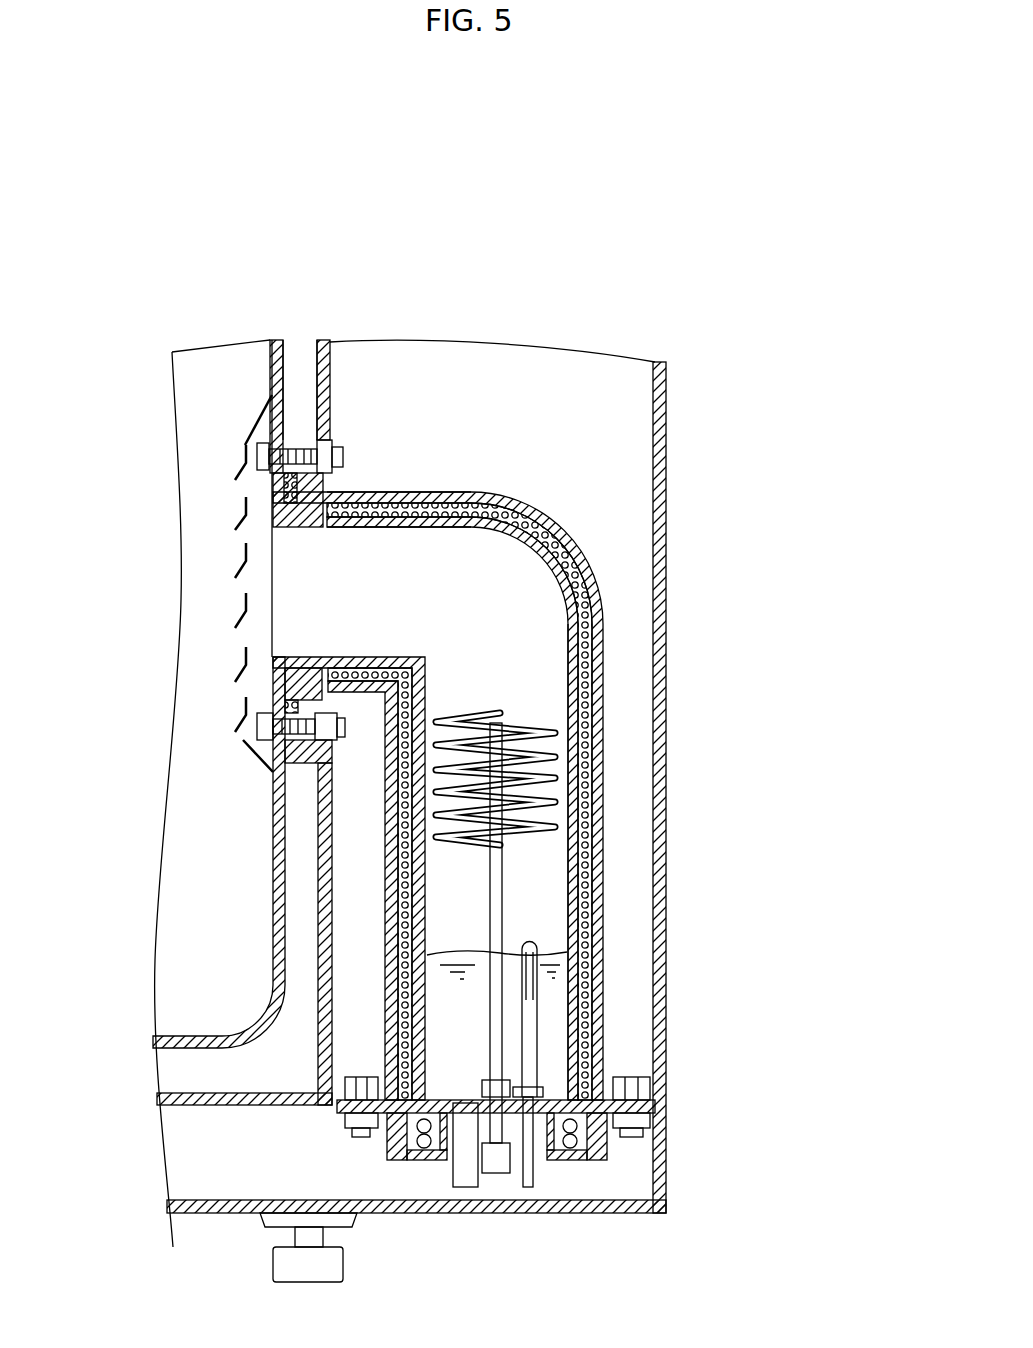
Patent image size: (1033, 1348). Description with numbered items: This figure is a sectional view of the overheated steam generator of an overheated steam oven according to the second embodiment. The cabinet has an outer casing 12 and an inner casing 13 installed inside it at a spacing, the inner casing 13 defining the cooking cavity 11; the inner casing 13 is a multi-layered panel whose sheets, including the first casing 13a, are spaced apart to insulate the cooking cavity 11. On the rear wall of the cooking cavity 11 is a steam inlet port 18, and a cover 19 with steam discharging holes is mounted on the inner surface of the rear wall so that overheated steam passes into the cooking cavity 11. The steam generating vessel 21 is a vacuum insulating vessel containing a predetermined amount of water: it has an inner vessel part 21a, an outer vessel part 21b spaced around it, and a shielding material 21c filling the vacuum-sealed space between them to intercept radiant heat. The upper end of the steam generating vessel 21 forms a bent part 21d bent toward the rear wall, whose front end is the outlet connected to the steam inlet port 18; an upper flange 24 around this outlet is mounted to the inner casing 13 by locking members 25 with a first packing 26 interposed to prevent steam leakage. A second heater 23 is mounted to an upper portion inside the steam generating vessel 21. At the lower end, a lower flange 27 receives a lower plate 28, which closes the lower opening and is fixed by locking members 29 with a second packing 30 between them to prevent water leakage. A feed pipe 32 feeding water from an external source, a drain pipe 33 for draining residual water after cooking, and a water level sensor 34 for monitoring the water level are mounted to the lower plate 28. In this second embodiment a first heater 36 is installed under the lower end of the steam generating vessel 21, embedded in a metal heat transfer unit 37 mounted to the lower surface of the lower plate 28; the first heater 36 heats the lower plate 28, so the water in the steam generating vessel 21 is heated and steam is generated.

The cooking cavity 11 is at (229, 849).
The outer casing 12 is at (660, 410).
The inner casing 13 is at (262, 363).
The first casing 13a is at (277, 340).
The steam inlet port 18 is at (275, 663).
The cover 19 is at (242, 452).
The steam generating vessel 21 is at (531, 765).
The inner vessel part 21a is at (603, 660).
The outer vessel part 21b is at (603, 697).
The shielding material 21c is at (600, 787).
The bent part 21d is at (420, 488).
The second heater 23 is at (603, 828).
The upper flange 24 is at (313, 427).
The locking member 25 is at (253, 423).
The first packing 26 is at (240, 498).
The lower flange 27 is at (658, 1106).
The lower plate 28 is at (597, 1137).
The locking member 29 is at (630, 1077).
The second packing 30 is at (400, 1120).
The feed pipe 32 is at (503, 1162).
The drain pipe 33 is at (463, 1180).
The water level sensor 34 is at (533, 943).
The first heater 36 is at (430, 1160).
The heat transfer unit 37 is at (578, 1160).